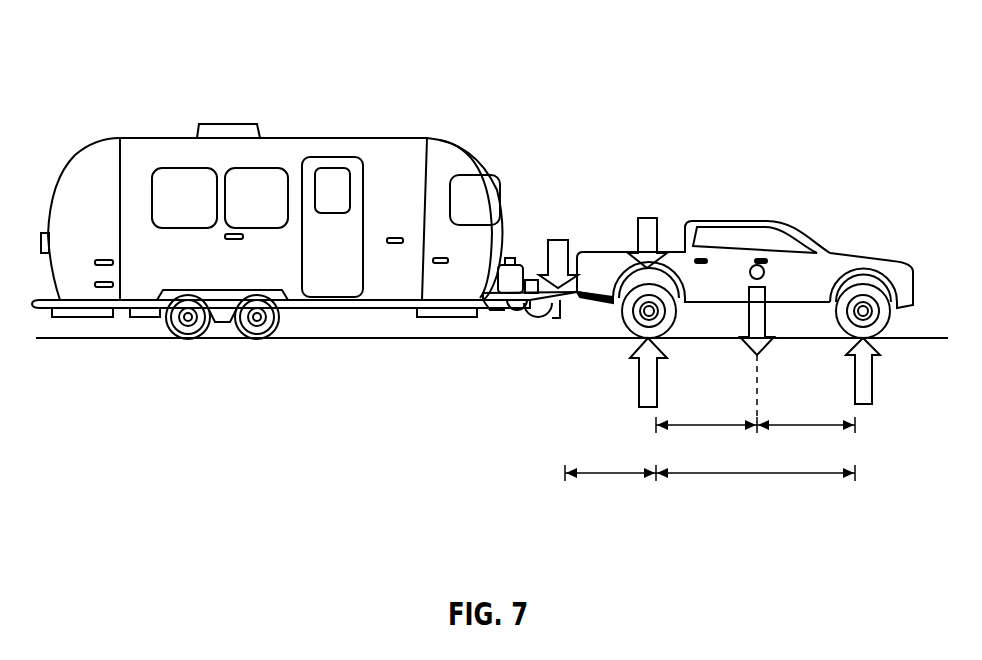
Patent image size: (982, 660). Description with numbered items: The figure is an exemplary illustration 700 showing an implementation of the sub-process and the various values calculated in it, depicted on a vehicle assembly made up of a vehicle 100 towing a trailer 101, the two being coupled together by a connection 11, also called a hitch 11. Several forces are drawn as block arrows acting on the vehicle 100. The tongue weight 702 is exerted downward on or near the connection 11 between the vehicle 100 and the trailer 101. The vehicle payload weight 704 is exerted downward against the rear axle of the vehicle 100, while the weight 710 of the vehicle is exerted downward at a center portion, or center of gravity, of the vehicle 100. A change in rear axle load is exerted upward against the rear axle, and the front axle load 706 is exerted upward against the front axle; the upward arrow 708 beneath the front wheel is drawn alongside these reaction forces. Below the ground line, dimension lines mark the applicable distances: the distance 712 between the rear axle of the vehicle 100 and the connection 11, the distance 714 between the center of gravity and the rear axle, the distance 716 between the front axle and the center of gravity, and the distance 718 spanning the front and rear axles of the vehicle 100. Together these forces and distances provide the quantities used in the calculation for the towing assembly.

The exemplary illustration 700 is at (122, 58).
The trailer 101 is at (100, 150).
The vehicle 100 is at (895, 268).
The connection (hitch) 11 is at (533, 322).
The tongue weight 702 is at (557, 238).
The vehicle payload weight 704 is at (647, 216).
The front axle load 706 is at (637, 377).
The front wheel ground reaction force 708 is at (874, 380).
The weight 710 is at (772, 294).
The distance c 712 is at (610, 474).
The distance b 714 is at (658, 430).
The distance a 716 is at (797, 427).
The distance l 718 is at (782, 478).